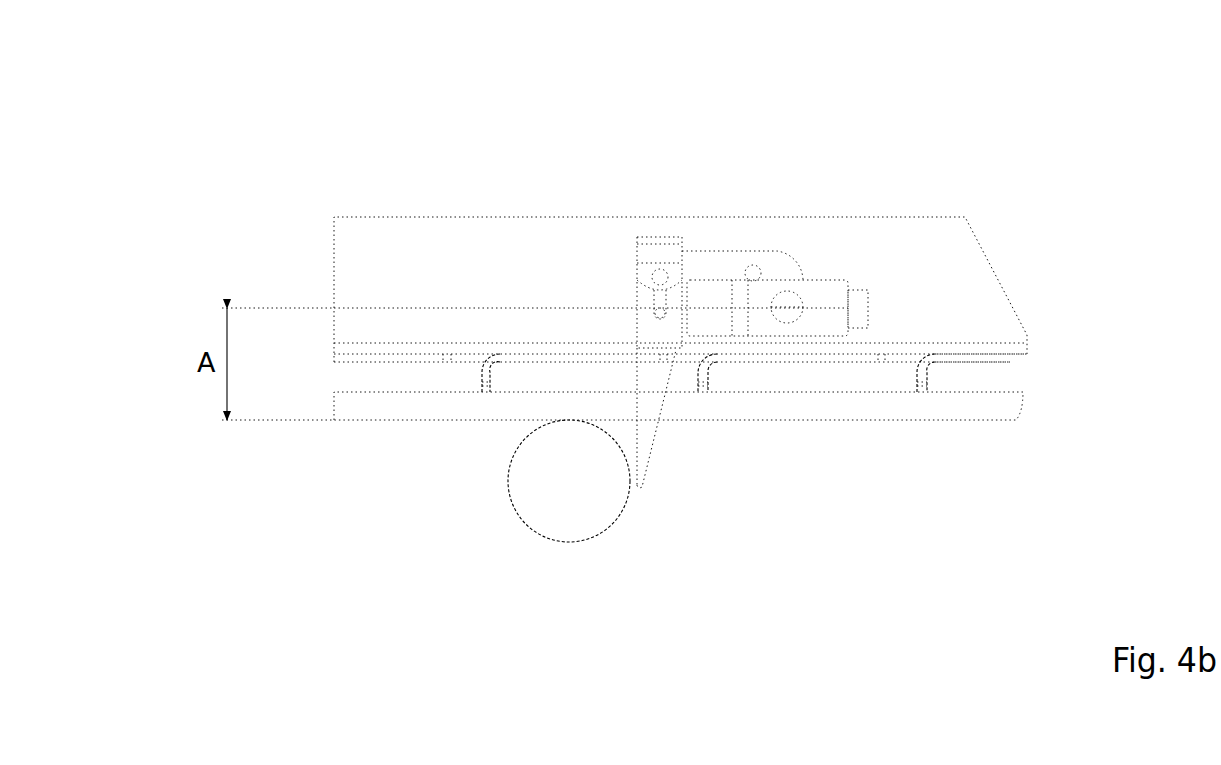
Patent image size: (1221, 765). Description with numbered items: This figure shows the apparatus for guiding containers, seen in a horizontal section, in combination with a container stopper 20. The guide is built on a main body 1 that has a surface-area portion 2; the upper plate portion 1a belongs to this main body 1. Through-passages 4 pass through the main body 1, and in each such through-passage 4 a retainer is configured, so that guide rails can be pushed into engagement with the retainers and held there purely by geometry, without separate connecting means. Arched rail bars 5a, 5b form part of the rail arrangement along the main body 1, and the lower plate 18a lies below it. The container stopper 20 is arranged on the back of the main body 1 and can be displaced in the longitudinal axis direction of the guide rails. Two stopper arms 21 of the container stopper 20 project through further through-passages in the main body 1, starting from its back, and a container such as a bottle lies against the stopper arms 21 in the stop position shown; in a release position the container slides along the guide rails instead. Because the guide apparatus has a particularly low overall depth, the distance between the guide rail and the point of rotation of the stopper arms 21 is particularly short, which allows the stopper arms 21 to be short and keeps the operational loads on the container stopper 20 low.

The main body 1 is at (353, 193).
The upper plate 1a is at (515, 172).
The surface-area portion 2 is at (345, 372).
The through-passage 4 is at (903, 357).
The arched rail bar 5a is at (1005, 362).
The arched rail bar 5b is at (1118, 348).
The lower plate 18a is at (998, 407).
The container stopper 20 is at (682, 187).
The stopper arm 21 is at (645, 440).